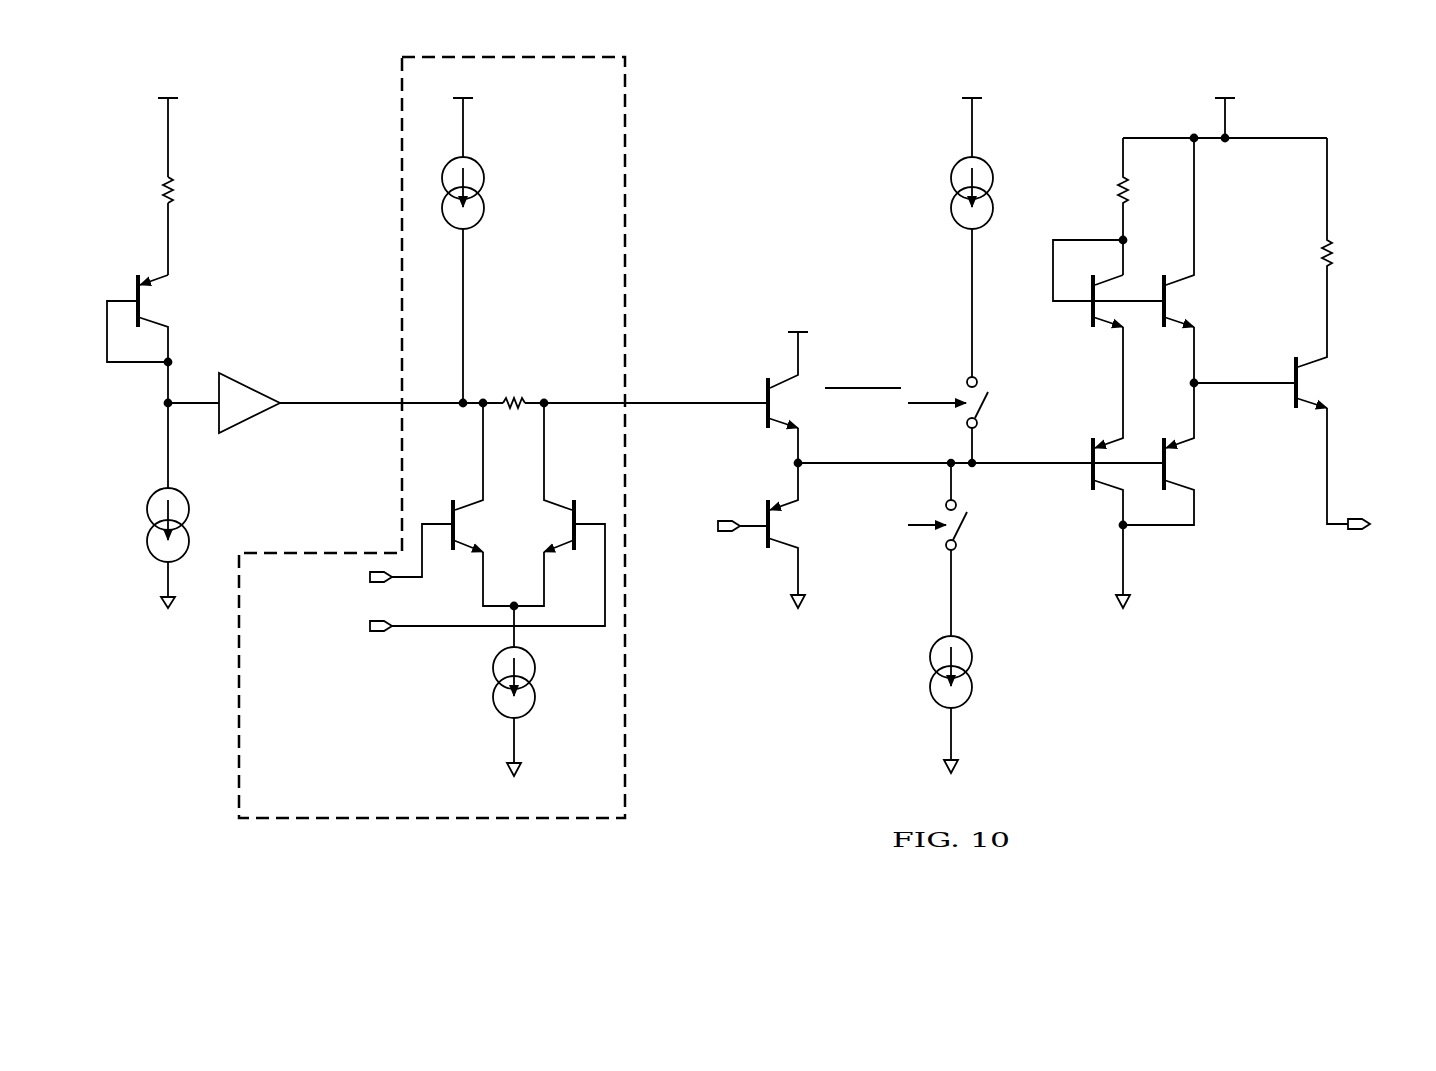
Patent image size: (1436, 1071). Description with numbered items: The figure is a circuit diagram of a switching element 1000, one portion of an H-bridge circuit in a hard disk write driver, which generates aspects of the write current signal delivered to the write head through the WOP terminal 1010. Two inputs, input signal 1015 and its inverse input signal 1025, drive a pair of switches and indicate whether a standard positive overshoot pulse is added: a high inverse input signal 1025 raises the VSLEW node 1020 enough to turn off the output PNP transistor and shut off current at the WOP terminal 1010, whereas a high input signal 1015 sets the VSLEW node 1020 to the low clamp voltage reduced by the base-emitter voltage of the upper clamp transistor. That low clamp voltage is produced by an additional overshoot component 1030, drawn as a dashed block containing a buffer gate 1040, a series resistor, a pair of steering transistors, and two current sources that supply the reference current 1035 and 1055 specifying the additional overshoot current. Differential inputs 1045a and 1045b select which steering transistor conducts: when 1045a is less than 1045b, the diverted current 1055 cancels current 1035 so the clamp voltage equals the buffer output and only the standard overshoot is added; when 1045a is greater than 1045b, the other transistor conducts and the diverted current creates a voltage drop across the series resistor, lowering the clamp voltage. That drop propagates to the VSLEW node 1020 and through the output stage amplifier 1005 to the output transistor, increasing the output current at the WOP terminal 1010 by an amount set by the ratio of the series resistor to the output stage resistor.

The switching element 1000 is at (1320, 86).
The output stage amplifier 1005 is at (1170, 552).
The WOP terminal 1010 is at (1354, 535).
The input signal 1015 is at (960, 535).
The VSLEW node 1020 is at (1030, 470).
The inverse input signal 1025 is at (990, 402).
The additional overshoot component 1030 is at (398, 282).
The reference current 1035 is at (492, 144).
The buffer gate 1040 is at (517, 410).
The differential input 1045a is at (312, 590).
The differential input 1045b is at (311, 643).
The reference current 1055 is at (500, 720).